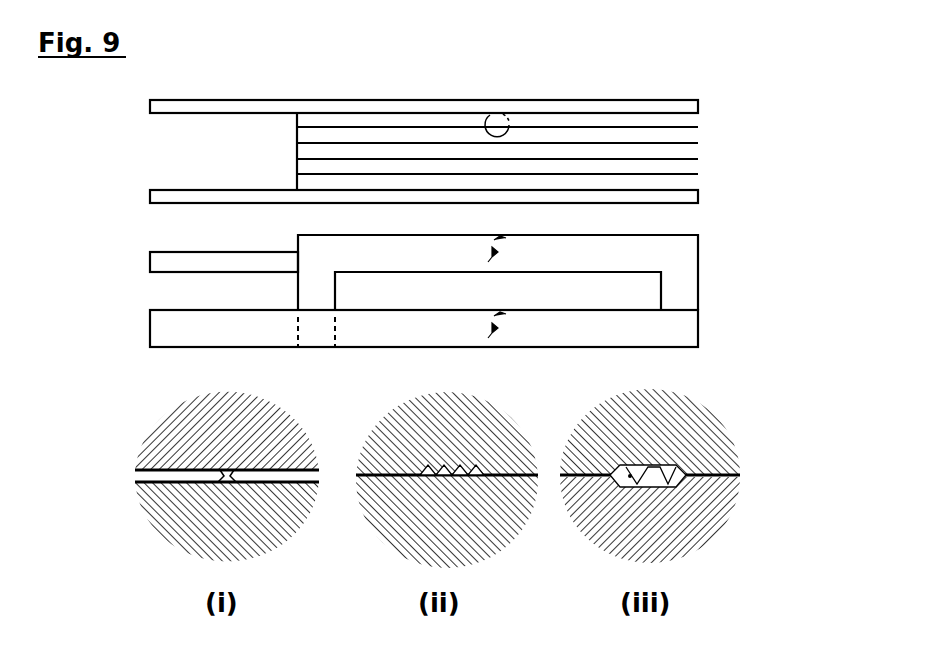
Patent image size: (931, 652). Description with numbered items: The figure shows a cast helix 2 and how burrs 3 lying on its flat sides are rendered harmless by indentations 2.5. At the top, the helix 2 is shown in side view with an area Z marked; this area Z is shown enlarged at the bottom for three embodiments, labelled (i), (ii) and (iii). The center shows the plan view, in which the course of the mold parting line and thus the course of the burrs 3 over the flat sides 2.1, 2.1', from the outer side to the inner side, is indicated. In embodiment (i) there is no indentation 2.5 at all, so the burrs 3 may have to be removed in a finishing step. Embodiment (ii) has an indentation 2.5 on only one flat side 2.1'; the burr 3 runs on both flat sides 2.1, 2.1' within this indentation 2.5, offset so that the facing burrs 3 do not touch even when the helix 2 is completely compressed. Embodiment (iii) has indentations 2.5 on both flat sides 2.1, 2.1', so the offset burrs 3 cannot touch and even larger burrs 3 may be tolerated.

The helix 2 is at (122, 128).
The flat side 2.1 is at (532, 195).
The flat side 2.1' is at (532, 159).
The area Z is at (170, 407).
The indentation 2.5 is at (618, 467).
The burr 3 is at (160, 528).